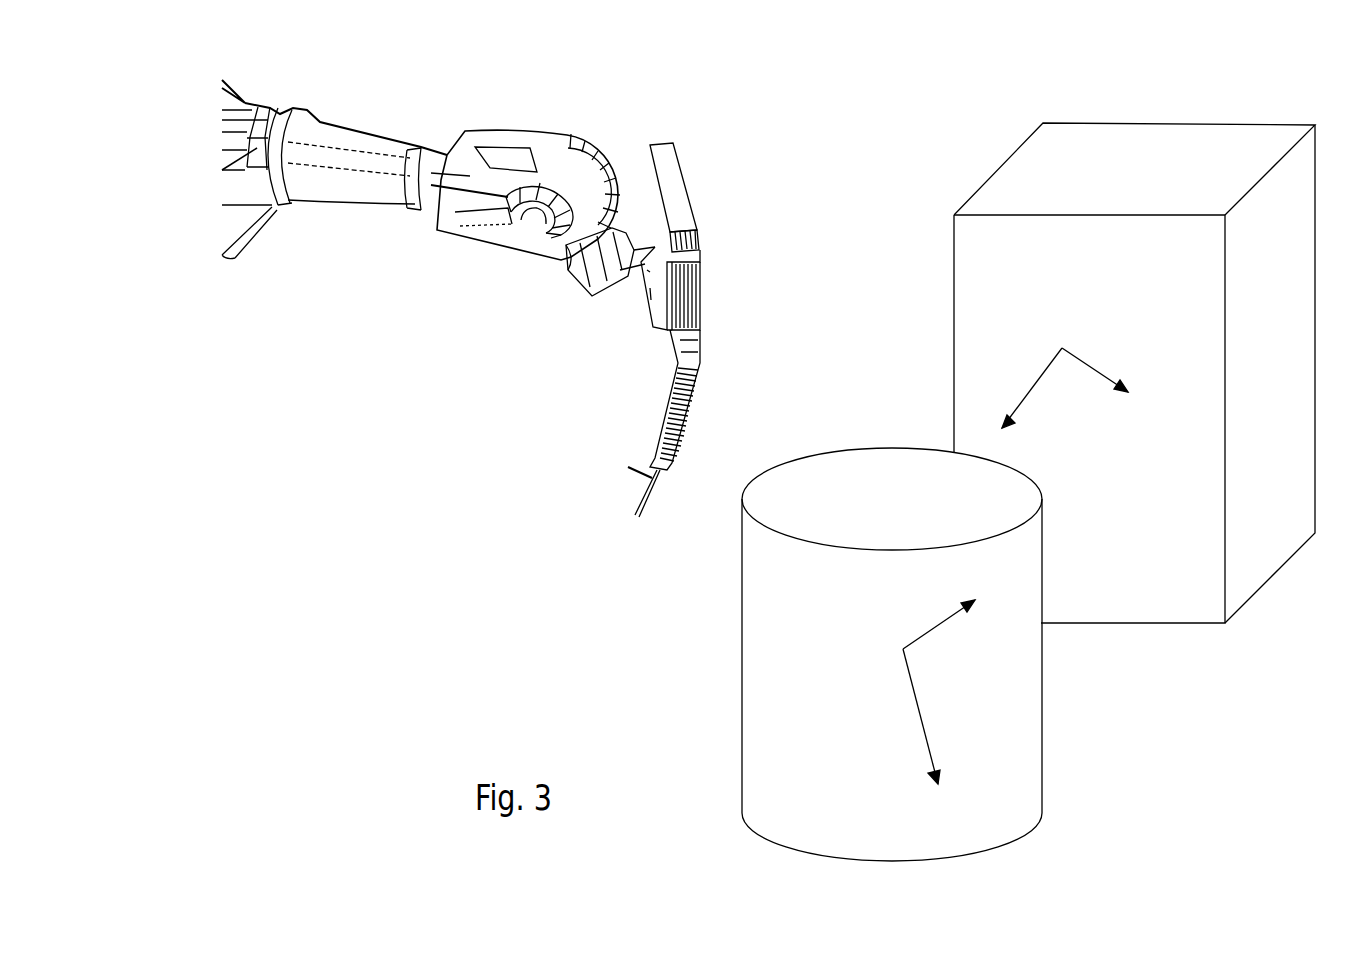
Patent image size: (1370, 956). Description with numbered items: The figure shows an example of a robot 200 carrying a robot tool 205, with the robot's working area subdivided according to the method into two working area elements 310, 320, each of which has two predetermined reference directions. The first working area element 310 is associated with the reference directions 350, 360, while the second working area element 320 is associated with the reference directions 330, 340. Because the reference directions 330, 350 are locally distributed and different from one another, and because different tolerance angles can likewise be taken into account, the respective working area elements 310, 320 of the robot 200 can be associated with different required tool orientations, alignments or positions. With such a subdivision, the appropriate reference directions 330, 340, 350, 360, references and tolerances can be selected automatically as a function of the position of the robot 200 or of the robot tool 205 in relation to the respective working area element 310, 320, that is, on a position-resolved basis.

The robot 200 is at (502, 133).
The robot tool 205 is at (682, 434).
The working area element 310 is at (1155, 115).
The working area element 320 is at (860, 447).
The reference direction 330 is at (912, 639).
The reference direction 340 is at (910, 711).
The reference direction 350 is at (1068, 349).
The reference direction 360 is at (1050, 350).